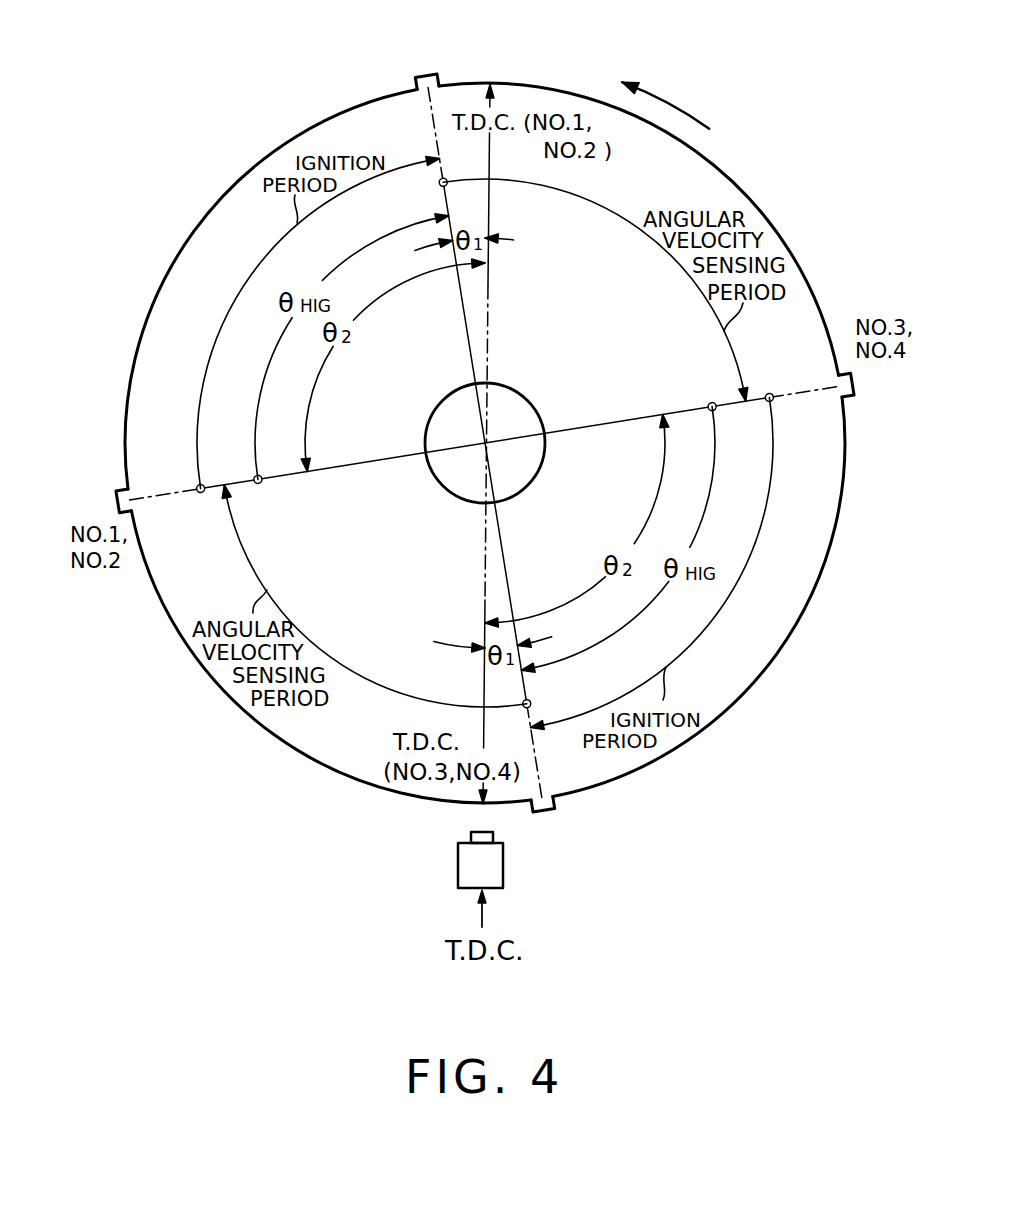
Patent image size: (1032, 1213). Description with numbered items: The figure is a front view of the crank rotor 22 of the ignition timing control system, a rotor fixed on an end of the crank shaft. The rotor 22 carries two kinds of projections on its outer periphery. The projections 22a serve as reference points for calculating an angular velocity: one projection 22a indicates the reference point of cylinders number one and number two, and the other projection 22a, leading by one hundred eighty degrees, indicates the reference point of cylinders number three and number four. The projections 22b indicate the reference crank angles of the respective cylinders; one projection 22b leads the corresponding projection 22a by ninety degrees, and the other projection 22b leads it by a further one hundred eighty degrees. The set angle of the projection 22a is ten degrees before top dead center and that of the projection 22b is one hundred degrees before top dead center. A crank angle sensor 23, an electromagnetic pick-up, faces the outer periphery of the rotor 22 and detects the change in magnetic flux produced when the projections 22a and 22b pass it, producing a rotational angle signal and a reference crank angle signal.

The crank rotor 22 is at (736, 183).
The projections 22a is at (428, 73).
The projections 22b is at (850, 395).
The crank angle sensor 23 is at (458, 867).